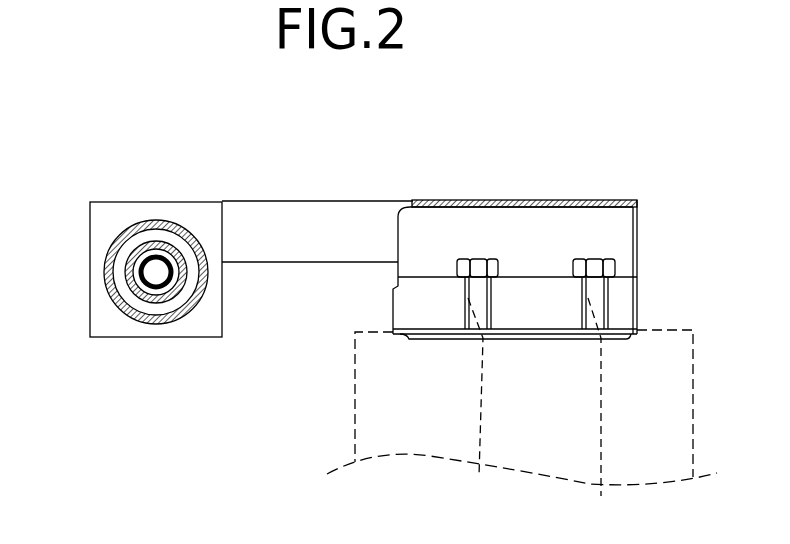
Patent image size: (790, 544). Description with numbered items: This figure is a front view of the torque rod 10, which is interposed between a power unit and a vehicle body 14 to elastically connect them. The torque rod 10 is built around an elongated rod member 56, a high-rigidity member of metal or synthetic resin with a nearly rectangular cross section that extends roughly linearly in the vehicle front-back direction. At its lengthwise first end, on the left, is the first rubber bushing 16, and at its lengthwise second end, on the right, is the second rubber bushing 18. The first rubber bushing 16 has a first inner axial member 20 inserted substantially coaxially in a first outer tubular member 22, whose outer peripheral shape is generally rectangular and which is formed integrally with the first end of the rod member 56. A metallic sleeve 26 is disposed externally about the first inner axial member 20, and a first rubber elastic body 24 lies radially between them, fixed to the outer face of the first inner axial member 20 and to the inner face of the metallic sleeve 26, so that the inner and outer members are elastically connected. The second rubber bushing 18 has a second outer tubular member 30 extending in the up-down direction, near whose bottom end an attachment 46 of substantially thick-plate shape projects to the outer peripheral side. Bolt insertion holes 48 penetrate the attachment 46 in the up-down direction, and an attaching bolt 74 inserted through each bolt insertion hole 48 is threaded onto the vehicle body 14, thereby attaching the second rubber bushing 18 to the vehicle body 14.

The torque rod 10 is at (658, 147).
The vehicle body 14 is at (683, 417).
The first rubber bushing 16 is at (70, 193).
The second rubber bushing 18 is at (646, 199).
The first inner axial member 20 is at (157, 293).
The first outer tubular member 22 is at (97, 289).
The first rubber elastic body 24 is at (175, 240).
The metallic sleeve 26 is at (135, 230).
The second outer tubular member 30 is at (638, 245).
The attachment 46 is at (412, 312).
The bolt insertion hole 48 is at (539, 410).
The rod member 56 is at (320, 198).
The attaching bolt 74 is at (478, 257).